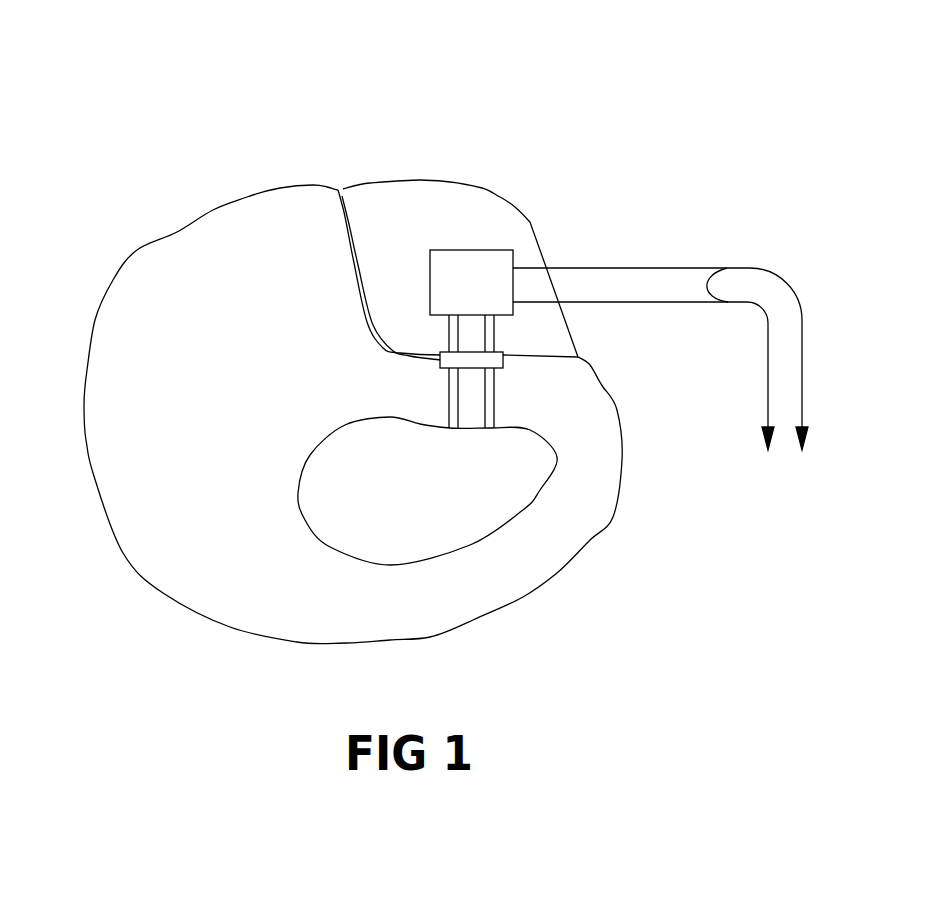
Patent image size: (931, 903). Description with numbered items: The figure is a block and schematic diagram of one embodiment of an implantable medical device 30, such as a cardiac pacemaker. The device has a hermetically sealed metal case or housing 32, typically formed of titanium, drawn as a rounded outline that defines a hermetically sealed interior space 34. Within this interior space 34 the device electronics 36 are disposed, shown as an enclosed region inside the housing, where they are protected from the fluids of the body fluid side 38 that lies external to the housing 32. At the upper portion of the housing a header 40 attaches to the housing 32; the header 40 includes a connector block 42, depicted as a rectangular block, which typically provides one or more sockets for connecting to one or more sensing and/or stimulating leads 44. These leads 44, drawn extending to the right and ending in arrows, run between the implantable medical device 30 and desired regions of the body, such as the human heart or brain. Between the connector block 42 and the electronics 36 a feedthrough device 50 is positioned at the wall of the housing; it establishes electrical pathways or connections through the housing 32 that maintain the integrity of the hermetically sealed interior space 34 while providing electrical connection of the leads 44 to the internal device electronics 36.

The implantable medical device 30 is at (600, 65).
The housing 32 is at (177, 232).
The interior space 34 is at (190, 411).
The device electronics 36 is at (415, 565).
The body fluid side 38 is at (193, 140).
The header 40 is at (398, 197).
The connector block 42 is at (477, 262).
The leads 44 is at (727, 268).
The feedthrough device 50 is at (503, 365).